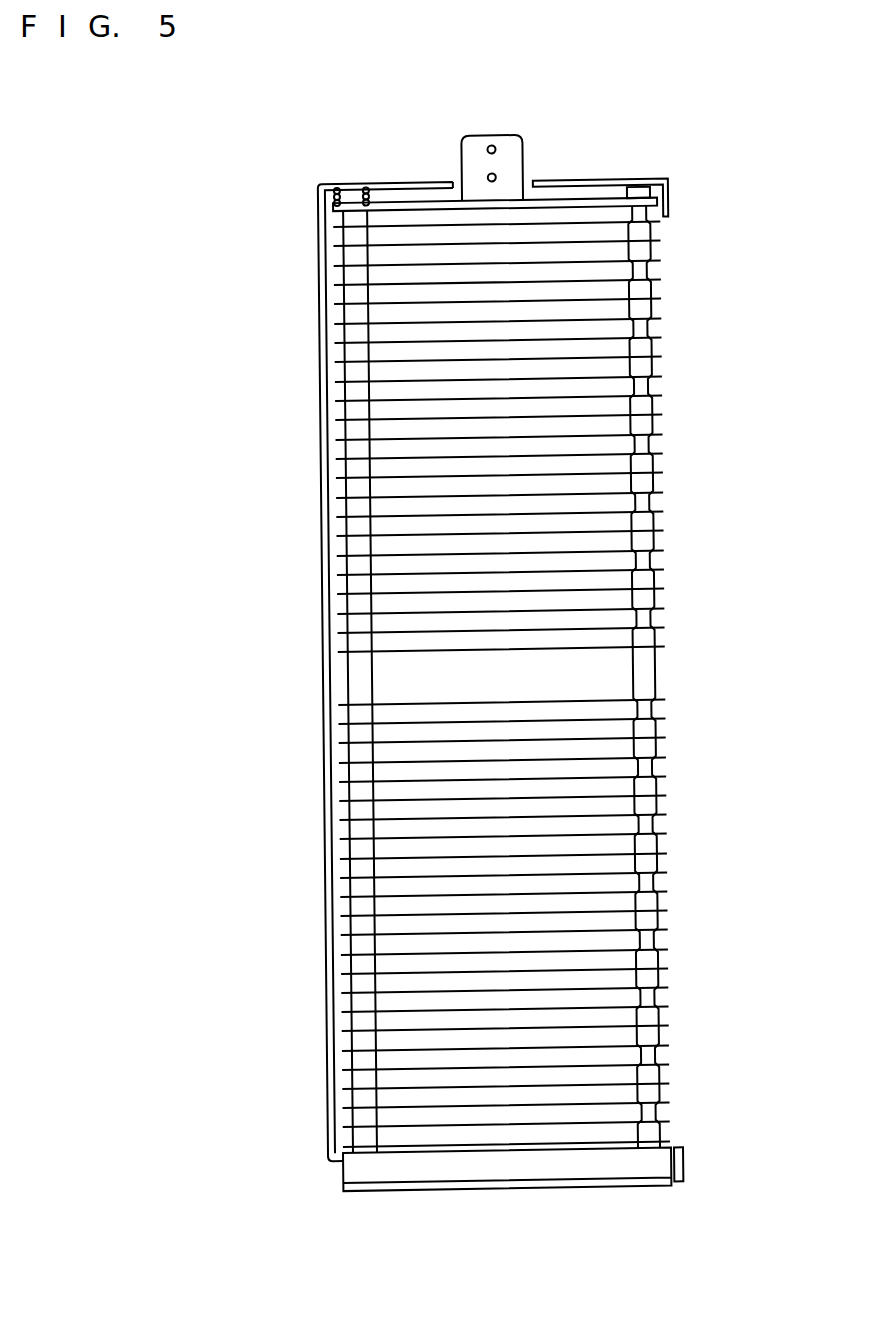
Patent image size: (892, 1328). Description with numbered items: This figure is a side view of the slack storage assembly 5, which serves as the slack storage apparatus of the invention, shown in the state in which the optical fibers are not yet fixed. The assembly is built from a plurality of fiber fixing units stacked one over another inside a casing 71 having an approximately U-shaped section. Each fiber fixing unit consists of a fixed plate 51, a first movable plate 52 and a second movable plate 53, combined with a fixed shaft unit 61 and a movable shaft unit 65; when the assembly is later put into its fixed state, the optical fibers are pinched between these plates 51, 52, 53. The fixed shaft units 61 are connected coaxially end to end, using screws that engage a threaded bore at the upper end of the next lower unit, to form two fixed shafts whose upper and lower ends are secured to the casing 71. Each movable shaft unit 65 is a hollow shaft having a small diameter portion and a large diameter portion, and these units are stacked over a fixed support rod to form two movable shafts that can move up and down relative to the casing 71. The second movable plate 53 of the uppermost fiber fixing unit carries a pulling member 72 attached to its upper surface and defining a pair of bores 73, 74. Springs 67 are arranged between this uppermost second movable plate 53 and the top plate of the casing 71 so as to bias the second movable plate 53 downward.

The slack storage assembly 5 is at (660, 114).
The fixed plate 51 is at (653, 677).
The first movable plate 52 is at (635, 677).
The second movable plate 53 is at (501, 685).
The fixed shaft unit 61 is at (496, 669).
The movable shaft unit 65 is at (643, 667).
The spring 67 is at (351, 197).
The casing 71 is at (501, 684).
The pulling member 72 is at (492, 168).
The bore 73 is at (491, 149).
The bore 74 is at (492, 177).